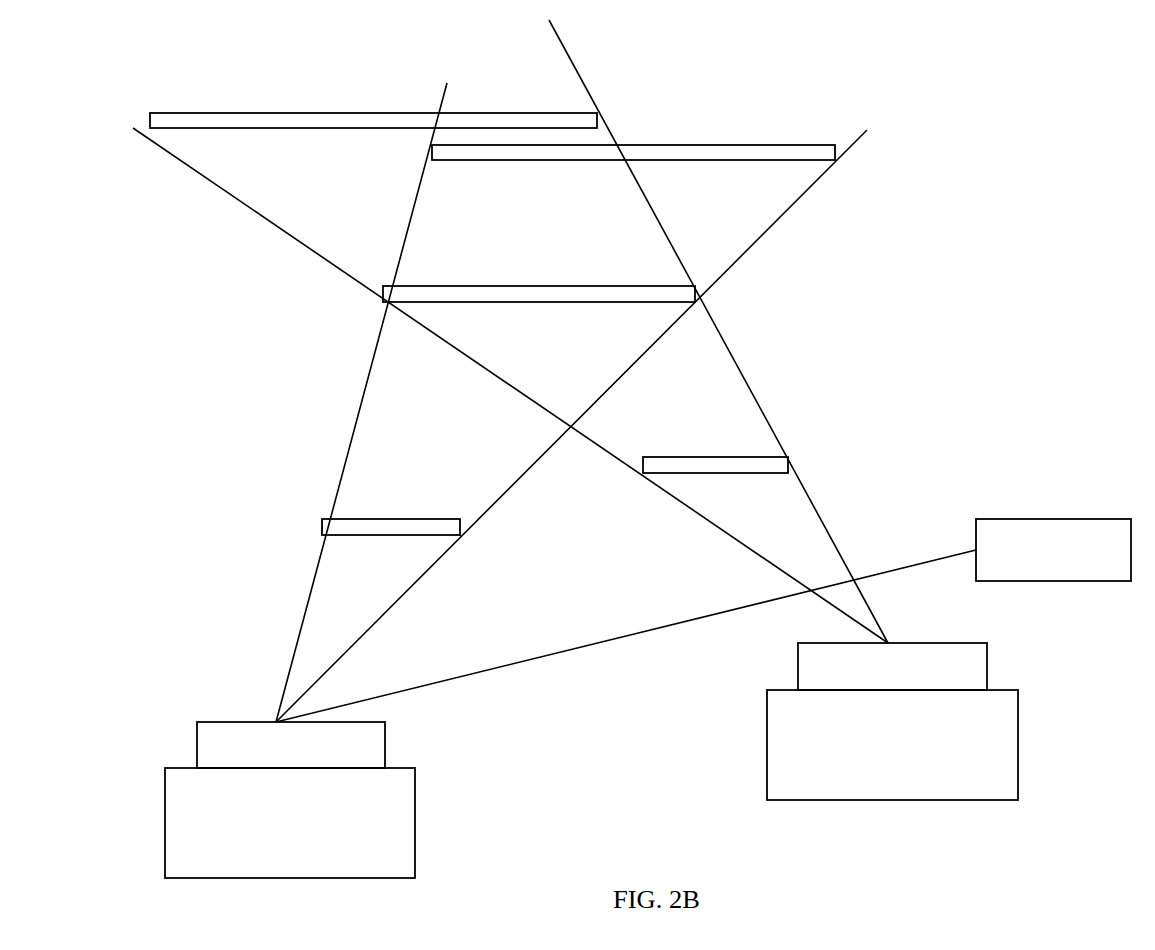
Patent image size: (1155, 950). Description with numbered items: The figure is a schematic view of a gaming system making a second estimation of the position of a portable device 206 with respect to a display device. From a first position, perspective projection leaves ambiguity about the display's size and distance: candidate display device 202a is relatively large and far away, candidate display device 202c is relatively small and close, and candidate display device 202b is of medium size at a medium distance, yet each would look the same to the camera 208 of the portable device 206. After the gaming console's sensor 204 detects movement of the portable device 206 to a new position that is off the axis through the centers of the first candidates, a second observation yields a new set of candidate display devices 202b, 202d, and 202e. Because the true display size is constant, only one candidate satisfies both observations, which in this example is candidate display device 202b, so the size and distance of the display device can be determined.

The candidate display device 202a is at (757, 158).
The candidate display device 202b is at (663, 298).
The candidate display device 202c is at (267, 532).
The candidate display device 202d is at (497, 116).
The candidate display device 202e is at (842, 461).
The sensor 204 is at (1096, 545).
The portable device 206 is at (905, 758).
The camera 208 is at (340, 753).